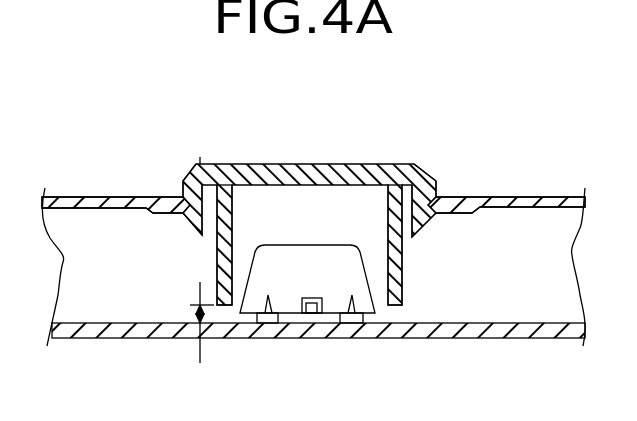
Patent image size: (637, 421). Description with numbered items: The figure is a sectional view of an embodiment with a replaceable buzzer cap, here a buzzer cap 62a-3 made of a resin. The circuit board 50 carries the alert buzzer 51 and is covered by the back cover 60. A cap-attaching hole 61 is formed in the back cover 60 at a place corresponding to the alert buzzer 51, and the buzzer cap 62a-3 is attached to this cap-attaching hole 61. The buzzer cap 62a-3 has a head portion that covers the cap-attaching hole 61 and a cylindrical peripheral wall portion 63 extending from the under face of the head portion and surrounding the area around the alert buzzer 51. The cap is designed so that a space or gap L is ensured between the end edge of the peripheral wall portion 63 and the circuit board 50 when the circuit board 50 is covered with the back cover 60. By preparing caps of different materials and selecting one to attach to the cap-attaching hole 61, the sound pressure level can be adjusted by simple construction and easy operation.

The buzzer cap made of a resin 62a-3 is at (270, 164).
The cap-attaching hole 61 is at (420, 166).
The cylindrical peripheral wall portion 63 is at (217, 263).
The back cover 60 is at (512, 197).
The circuit board 50 is at (115, 338).
The alert buzzer 51 is at (357, 272).
The space or gap L is at (178, 322).